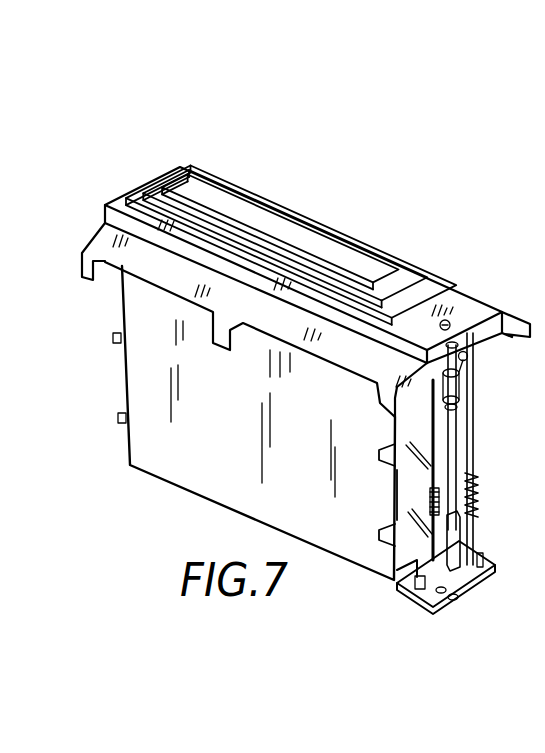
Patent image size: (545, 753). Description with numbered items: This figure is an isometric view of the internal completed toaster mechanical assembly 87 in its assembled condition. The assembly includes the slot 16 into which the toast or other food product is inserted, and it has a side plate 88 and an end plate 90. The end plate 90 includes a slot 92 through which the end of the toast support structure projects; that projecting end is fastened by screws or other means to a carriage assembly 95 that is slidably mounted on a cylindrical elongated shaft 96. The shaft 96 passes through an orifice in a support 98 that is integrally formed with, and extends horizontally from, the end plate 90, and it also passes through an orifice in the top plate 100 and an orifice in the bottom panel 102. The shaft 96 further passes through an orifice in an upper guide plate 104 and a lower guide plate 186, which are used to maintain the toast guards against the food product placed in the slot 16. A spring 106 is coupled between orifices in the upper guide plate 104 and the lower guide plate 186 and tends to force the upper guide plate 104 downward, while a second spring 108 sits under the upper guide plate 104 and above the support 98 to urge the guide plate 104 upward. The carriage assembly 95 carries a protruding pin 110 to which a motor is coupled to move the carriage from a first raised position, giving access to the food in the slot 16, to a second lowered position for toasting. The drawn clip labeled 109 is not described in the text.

The slot 16 is at (205, 187).
The mechanical assembly 87 is at (268, 173).
The side plate 88 is at (222, 495).
The end plate 90 is at (397, 444).
The slot 92 is at (425, 480).
The carriage assembly 95 is at (462, 537).
The cylindrical elongated shaft 96 is at (462, 428).
The support 98 is at (458, 402).
The top plate 100 is at (462, 305).
The bottom panel 102 is at (413, 603).
The upper guide plate 104 is at (469, 356).
The spring 106 is at (478, 494).
The second spring 108 is at (443, 404).
The lower retaining clip 109 is at (418, 513).
The protruding pin 110 is at (474, 580).
The lower guide plate 186 is at (452, 600).